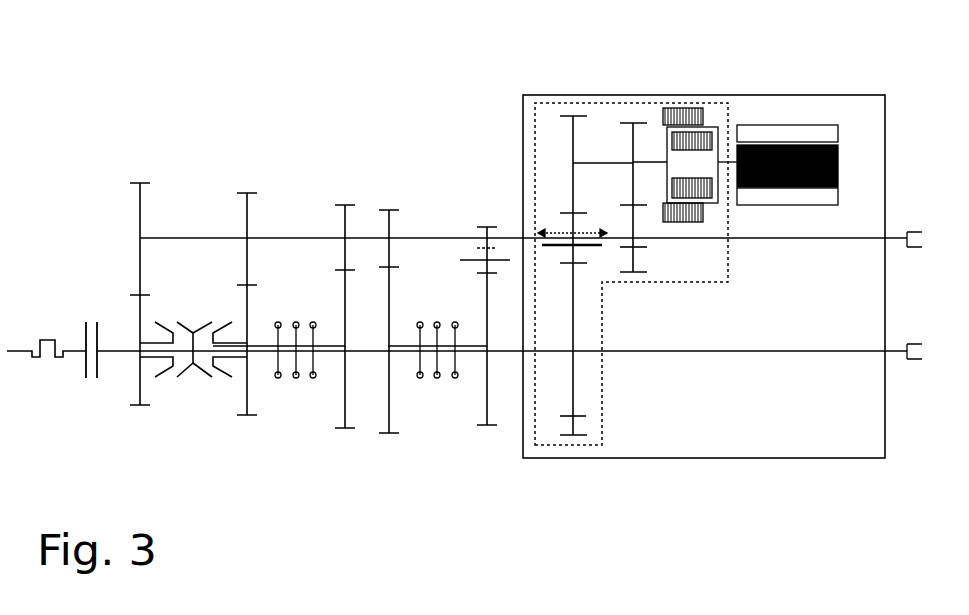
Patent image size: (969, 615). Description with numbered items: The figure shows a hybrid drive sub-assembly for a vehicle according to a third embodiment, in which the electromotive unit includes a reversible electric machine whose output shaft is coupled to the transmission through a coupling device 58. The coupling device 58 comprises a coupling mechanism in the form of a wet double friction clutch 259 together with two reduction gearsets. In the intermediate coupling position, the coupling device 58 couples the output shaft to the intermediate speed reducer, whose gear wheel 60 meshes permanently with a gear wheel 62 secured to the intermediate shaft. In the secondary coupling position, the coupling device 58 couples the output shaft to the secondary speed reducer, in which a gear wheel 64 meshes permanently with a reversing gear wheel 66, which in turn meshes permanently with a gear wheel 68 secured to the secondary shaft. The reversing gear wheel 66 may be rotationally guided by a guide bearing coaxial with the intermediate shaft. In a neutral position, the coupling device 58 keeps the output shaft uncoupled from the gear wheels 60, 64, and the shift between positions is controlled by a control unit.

The coupling device 58 is at (535, 417).
The gear wheel 60 is at (631, 145).
The gear wheel 62 is at (634, 247).
The gear wheel 64 is at (572, 147).
The reversing gear wheel 66 is at (574, 252).
The gear wheel 68 is at (571, 416).
The wet double friction clutch 259 is at (696, 68).